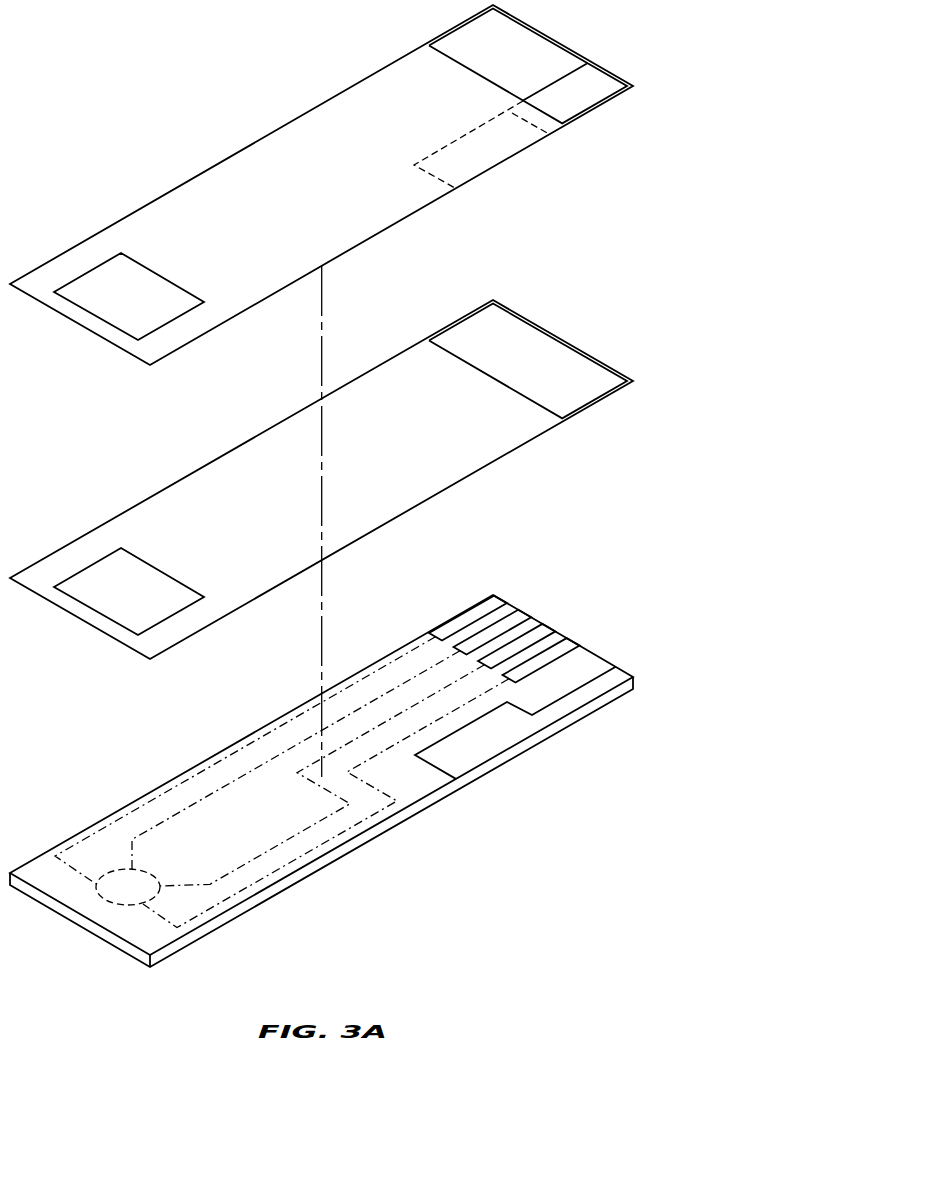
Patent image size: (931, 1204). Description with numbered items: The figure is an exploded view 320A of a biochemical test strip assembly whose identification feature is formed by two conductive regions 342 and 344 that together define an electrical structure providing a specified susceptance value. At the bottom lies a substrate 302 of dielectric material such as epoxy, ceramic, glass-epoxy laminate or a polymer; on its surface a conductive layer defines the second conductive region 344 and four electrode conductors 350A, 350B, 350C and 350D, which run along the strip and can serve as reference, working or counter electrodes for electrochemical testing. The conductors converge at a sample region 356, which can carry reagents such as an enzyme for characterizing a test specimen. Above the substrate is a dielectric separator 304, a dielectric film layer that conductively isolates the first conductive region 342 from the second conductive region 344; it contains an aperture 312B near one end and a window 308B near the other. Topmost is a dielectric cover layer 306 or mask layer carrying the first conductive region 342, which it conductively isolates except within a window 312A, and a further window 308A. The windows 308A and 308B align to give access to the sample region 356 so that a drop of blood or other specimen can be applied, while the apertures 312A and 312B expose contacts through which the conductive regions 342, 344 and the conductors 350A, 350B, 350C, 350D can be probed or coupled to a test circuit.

The view of biochemical test strip assembly 320A is at (141, 43).
The substrate 302 is at (587, 665).
The dielectric separator 304 is at (283, 435).
The dielectric cover layer 306 is at (283, 140).
The window 308A is at (148, 282).
The window 308B is at (148, 577).
The window 312A is at (522, 42).
The aperture 312B is at (550, 353).
The first conductive region 342 is at (495, 152).
The second conductive region 344 is at (497, 743).
The electrode conductor 350A is at (247, 747).
The electrode conductor 350B is at (203, 800).
The electrode conductor 350C is at (307, 825).
The electrode conductor 350D is at (277, 872).
The sample region 356 is at (138, 883).